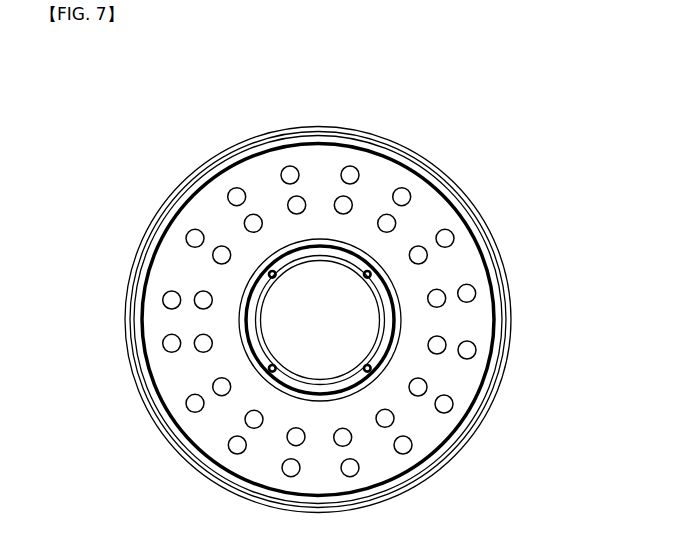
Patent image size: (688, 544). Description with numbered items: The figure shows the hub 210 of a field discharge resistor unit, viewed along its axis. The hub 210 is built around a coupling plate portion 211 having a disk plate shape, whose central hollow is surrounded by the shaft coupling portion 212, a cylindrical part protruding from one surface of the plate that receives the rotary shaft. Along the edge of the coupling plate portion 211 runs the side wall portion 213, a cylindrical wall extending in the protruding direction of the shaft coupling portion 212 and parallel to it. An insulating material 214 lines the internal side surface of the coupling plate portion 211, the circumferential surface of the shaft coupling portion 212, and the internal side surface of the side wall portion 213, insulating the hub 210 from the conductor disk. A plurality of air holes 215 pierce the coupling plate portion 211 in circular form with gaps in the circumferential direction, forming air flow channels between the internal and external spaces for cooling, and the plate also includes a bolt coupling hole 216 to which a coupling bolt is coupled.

The hub 210 is at (502, 82).
The coupling plate portion 211 is at (460, 257).
The shaft coupling portion 212 is at (387, 323).
The side wall portion 213 is at (477, 212).
The insulating material 214 is at (349, 246).
The air hole 215 is at (418, 386).
The bolt coupling hole 216 is at (444, 404).